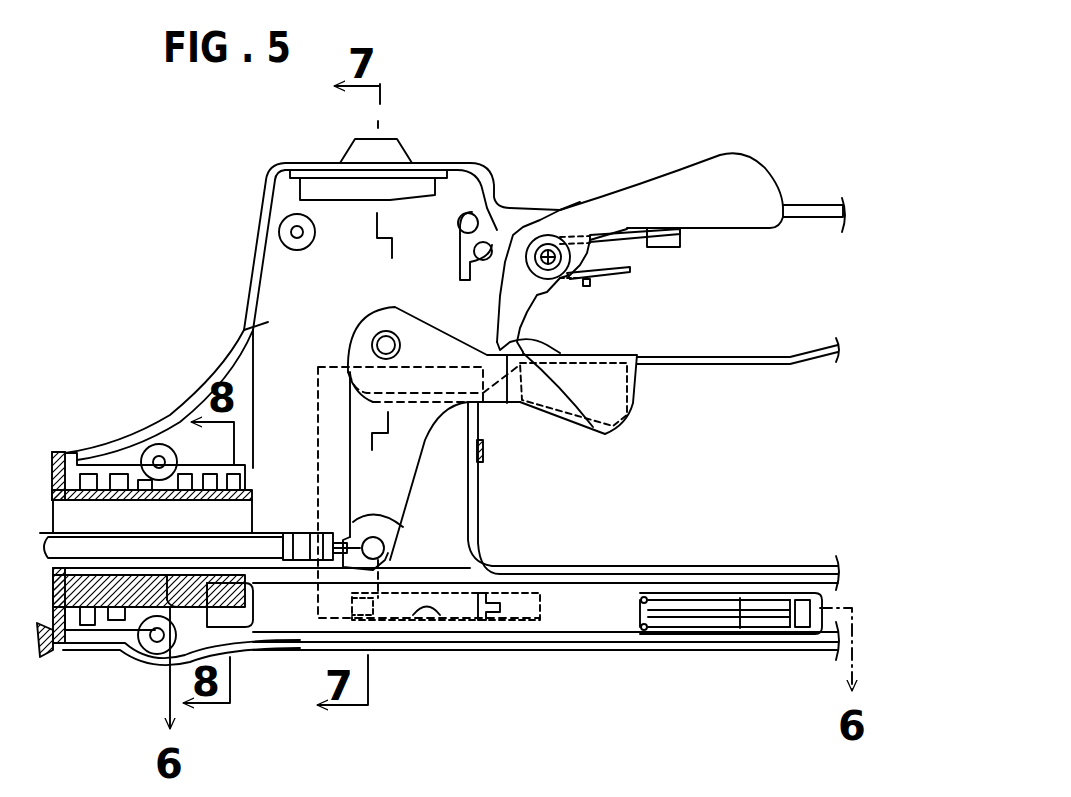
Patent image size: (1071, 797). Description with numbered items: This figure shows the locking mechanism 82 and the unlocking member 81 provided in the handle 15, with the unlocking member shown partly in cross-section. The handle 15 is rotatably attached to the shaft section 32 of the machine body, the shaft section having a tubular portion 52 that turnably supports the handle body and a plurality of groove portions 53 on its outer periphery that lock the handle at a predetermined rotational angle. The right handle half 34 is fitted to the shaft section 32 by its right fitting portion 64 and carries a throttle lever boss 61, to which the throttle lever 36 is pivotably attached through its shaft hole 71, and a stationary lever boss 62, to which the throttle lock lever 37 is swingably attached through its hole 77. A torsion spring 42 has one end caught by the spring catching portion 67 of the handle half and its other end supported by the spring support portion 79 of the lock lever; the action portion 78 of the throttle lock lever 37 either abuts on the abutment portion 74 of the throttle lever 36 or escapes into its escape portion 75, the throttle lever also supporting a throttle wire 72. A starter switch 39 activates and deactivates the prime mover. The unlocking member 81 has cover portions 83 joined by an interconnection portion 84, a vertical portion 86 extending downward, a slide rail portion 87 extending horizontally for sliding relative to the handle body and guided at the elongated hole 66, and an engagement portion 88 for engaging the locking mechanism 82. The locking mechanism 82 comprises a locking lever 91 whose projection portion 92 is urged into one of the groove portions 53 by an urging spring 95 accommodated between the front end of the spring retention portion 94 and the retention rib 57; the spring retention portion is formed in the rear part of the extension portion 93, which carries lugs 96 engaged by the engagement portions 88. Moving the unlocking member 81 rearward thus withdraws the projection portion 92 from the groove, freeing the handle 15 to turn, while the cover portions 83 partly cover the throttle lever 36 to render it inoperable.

The handle 15 is at (200, 145).
The shaft section 32 is at (190, 448).
The right handle half 34 is at (813, 195).
The throttle lever 36 is at (645, 382).
The throttle lock lever 37 is at (747, 173).
The starter switch 39 is at (388, 148).
The torsion spring 42 is at (640, 246).
The tubular portion 52 is at (110, 467).
The groove portions 53 is at (190, 593).
The retention rib 57 is at (760, 605).
The throttle lever boss 61 is at (395, 340).
The stationary lever boss 62 is at (552, 238).
The right fitting portion 64 is at (135, 472).
The elongated hole 66 is at (428, 607).
The spring catching portion 67 is at (588, 281).
The shaft hole 71 is at (388, 336).
The throttle wire 72 is at (143, 560).
The abutment portion 74 is at (513, 367).
The escape portion 75 is at (535, 340).
The hole 77 is at (530, 248).
The action portion 78 is at (527, 353).
The spring support portion 79 is at (676, 249).
The unlocking member 81 is at (486, 449).
The locking mechanism 82 is at (620, 636).
The cover portions 83 is at (338, 366).
The interconnection portion 84 is at (482, 455).
The vertical portion 86 is at (403, 530).
The slide rail portion 87 is at (540, 607).
The engagement portion 88 is at (372, 605).
The locking lever 91 is at (636, 620).
The projection portion 92 is at (213, 617).
The extension portion 93 is at (588, 622).
The spring retention portion 94 is at (728, 612).
The urging spring 95 is at (770, 615).
The lugs 96 is at (496, 614).